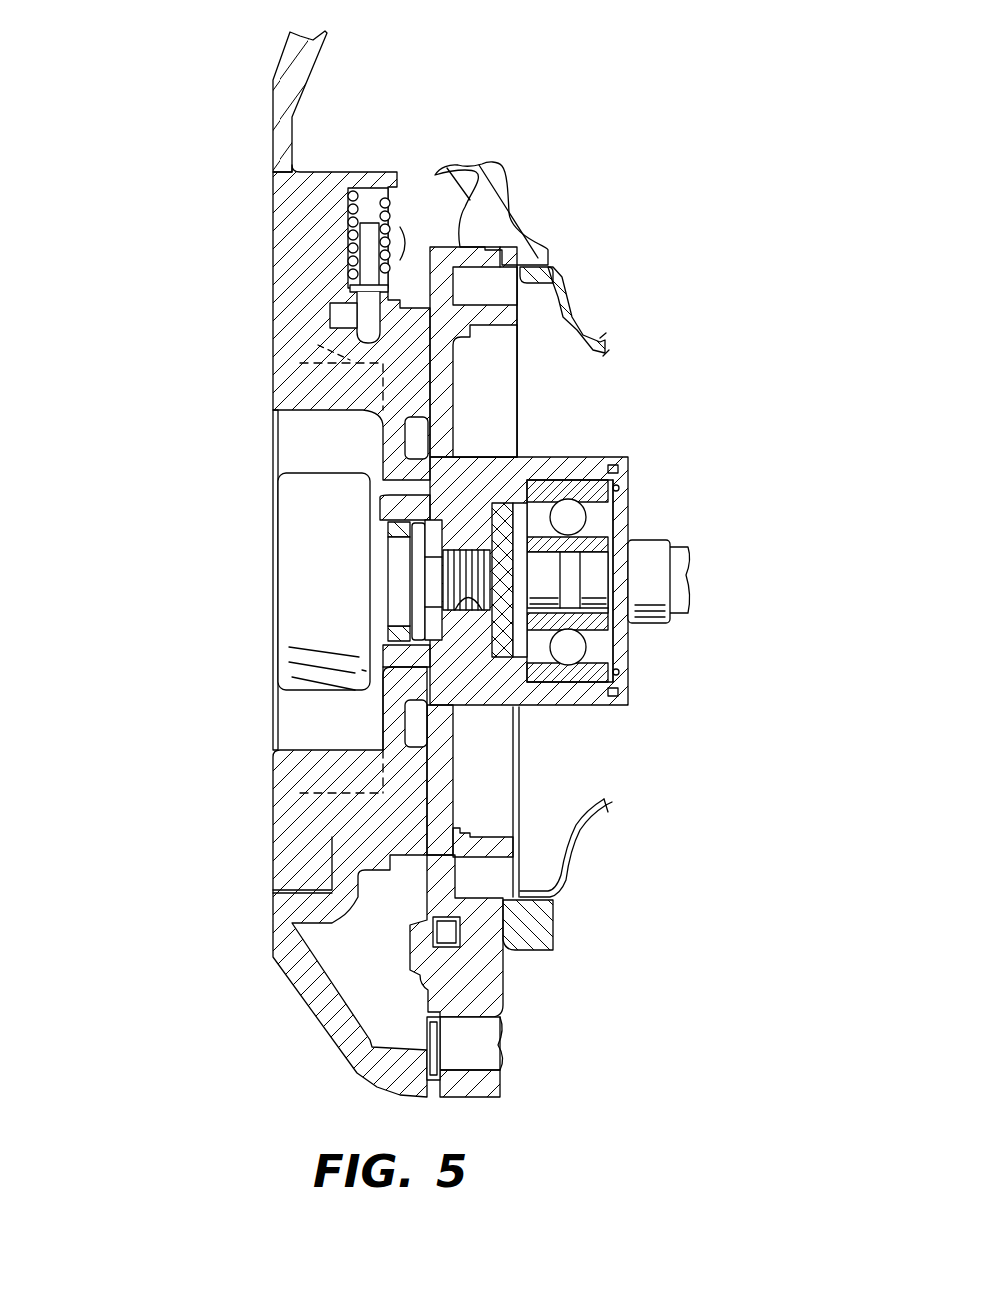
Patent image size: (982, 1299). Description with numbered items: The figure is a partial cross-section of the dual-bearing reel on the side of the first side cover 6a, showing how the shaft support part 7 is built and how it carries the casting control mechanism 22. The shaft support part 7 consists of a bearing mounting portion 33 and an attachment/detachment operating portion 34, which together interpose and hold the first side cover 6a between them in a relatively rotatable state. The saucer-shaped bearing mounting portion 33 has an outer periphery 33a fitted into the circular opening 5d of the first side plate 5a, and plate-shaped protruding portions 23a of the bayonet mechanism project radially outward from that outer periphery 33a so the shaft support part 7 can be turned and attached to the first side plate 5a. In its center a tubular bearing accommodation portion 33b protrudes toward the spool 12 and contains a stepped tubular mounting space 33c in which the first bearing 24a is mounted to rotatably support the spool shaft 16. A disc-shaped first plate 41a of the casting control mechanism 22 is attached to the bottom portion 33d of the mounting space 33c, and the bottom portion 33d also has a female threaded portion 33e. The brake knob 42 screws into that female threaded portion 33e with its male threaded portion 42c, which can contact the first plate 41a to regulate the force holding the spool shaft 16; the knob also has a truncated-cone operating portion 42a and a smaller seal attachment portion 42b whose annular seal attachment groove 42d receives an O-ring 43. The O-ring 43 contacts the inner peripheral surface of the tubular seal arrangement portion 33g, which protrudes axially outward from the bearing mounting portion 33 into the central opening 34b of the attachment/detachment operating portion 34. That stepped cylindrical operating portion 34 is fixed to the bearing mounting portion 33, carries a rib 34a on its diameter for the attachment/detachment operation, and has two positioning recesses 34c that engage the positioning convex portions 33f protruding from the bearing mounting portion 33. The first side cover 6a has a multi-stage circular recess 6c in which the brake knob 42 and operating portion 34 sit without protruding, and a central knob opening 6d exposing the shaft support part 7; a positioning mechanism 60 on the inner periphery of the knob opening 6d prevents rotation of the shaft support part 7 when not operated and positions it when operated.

The first side cover 6a is at (262, 62).
The positioning mechanism 60 is at (340, 248).
The positioning recesses 34c is at (372, 330).
The rib 34a is at (350, 397).
The positioning convex portions 33f is at (395, 440).
The attachment/detachment operating portion 34 is at (378, 441).
The seal arrangement portion 33g is at (372, 497).
The casting control mechanism 22 is at (264, 552).
The operating portion 42a is at (300, 577).
The brake knob 42 is at (267, 602).
The seal attachment groove 42d is at (398, 600).
The opening 34b is at (383, 700).
The knob opening 6d is at (322, 852).
The recess 6c is at (305, 868).
The bearing mounting portion 33 is at (417, 887).
The protruding portions 23a is at (440, 940).
The outer periphery 33a is at (472, 230).
The shaft support part 7 is at (500, 162).
The first side plate 5a is at (543, 224).
The opening 5d is at (560, 282).
The spool 12 is at (560, 300).
The bearing accommodation portion 33b is at (547, 448).
The first bearing 24a is at (585, 490).
The bottom portion 33d is at (580, 495).
The spool shaft 16 is at (662, 538).
The first plate 41a is at (610, 600).
The mounting space 33c is at (618, 655).
The female threaded portion 33e is at (517, 712).
The male threaded portion 42c is at (517, 712).
The seal attachment portion 42b is at (583, 810).
The O-ring 43 is at (548, 955).